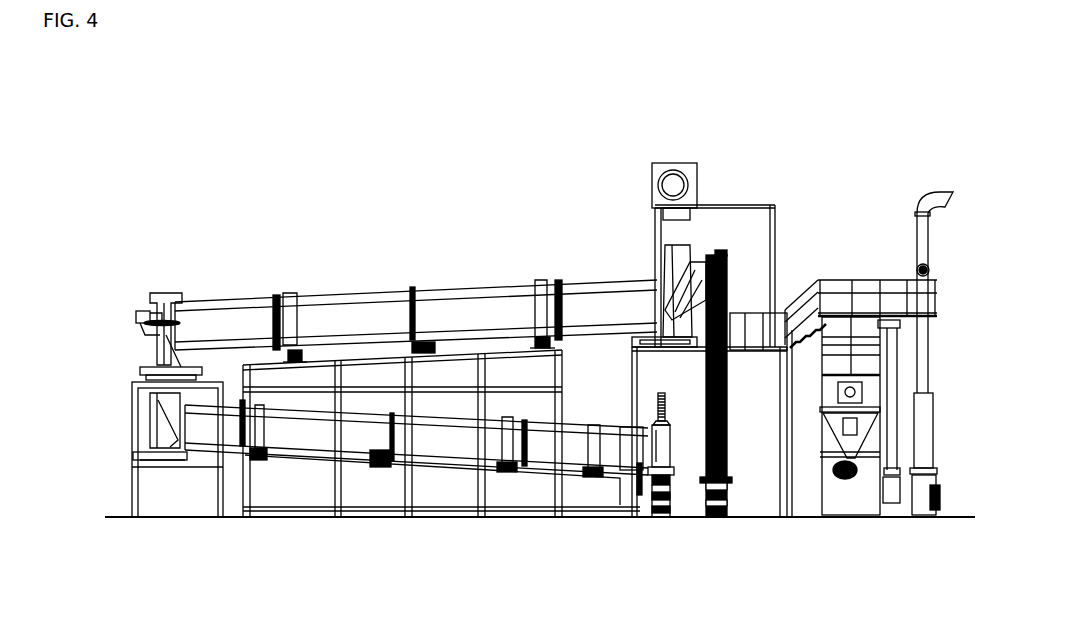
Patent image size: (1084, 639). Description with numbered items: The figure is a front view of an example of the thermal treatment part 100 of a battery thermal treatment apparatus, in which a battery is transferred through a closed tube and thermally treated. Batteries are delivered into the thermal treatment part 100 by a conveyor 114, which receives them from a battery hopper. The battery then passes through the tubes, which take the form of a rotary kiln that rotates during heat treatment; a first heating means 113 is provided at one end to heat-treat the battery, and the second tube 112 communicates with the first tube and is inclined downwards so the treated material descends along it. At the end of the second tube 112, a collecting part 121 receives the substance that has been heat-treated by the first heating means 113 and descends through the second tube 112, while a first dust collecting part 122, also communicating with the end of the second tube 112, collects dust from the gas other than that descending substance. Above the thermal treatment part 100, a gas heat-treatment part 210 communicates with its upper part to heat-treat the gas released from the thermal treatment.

The thermal treatment part 100 is at (162, 130).
The second tube 112 is at (452, 500).
The first heating means 113 is at (140, 318).
The conveyor 114 is at (727, 457).
The collecting part 121 is at (665, 447).
The first dust collecting part 122 is at (887, 505).
The gas heat-treatment part 210 is at (676, 160).